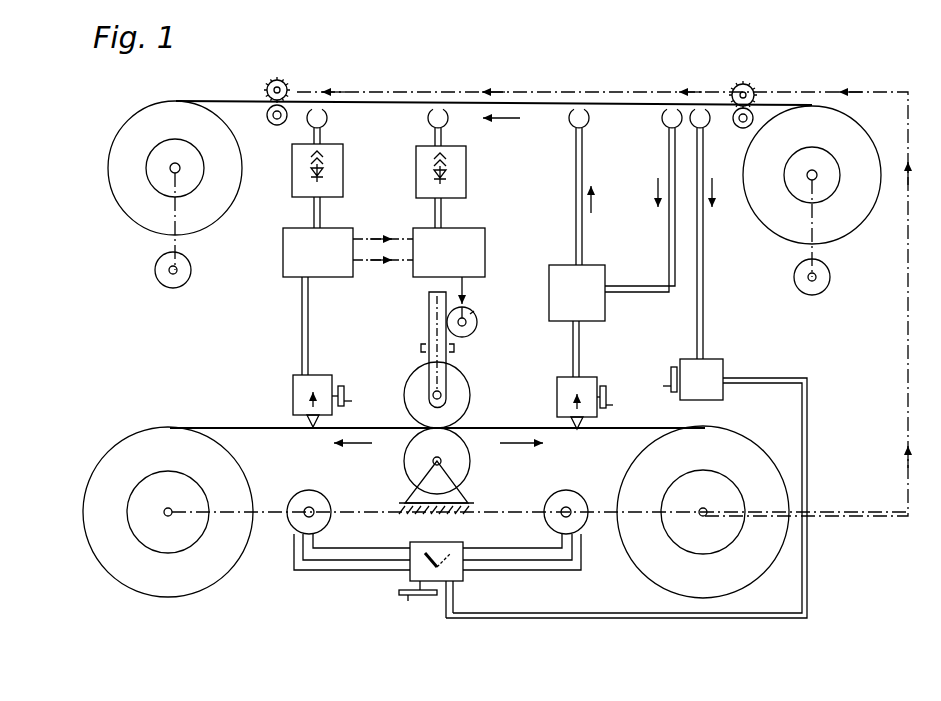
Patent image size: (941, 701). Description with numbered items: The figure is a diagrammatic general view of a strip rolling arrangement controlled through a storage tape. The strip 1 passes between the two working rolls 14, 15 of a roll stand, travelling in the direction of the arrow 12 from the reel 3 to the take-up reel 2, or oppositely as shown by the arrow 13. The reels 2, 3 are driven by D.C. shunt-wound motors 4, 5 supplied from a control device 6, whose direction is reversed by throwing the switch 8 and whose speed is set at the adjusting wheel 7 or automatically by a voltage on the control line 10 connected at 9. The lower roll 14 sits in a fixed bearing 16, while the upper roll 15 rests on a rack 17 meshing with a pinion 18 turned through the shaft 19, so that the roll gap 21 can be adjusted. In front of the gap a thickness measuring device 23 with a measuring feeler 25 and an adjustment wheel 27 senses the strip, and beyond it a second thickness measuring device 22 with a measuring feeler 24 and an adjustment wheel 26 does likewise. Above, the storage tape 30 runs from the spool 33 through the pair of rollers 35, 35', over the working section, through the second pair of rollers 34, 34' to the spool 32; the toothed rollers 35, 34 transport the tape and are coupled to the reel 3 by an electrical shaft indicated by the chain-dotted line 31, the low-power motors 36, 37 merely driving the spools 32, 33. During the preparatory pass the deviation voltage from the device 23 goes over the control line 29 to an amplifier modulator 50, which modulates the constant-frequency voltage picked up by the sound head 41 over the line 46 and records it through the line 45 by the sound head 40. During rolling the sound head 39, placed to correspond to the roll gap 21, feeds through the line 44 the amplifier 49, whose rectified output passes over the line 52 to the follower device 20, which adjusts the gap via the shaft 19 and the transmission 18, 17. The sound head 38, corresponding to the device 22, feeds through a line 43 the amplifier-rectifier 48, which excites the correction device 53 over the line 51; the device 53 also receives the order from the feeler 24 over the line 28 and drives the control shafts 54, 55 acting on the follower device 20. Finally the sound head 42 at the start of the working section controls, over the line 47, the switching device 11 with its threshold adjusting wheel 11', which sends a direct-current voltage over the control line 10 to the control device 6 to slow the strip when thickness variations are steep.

The strip 1 is at (611, 433).
The take-up reel 2 is at (112, 560).
The reel 3 is at (640, 556).
The D.C. shunt-wound motor 4 is at (300, 522).
The D.C. shunt-wound motor 5 is at (555, 523).
The control device 6 is at (418, 575).
The adjusting wheel 7 is at (418, 609).
The switch 8 is at (425, 553).
The connection point 9 is at (455, 585).
The control line 10 is at (808, 400).
The switching device 11 is at (719, 375).
The adjusting wheel 11' is at (668, 394).
The arrow 12 is at (332, 445).
The arrow 13 is at (537, 445).
The working roll 14 is at (412, 462).
The working roll 15 is at (412, 397).
The fixed bearing 16 is at (450, 470).
The rack 17 is at (430, 362).
The pinion 18 is at (470, 335).
The shaft 19 is at (465, 287).
The follower device 20 is at (476, 246).
The roll gap 21 is at (455, 428).
The thickness measuring device 22 is at (303, 391).
The thickness measuring device 23 is at (590, 378).
The measuring feeler 24 is at (305, 424).
The measuring feeler 25 is at (585, 425).
The adjustment wheel 26 is at (342, 385).
The adjustment wheel 27 is at (606, 395).
The line 28 is at (302, 331).
The control line 29 is at (583, 345).
The storage tape 30 is at (538, 108).
The chain-dotted line 31 is at (465, 92).
The reel or spool 32 is at (143, 213).
The reel or spool 33 is at (850, 215).
The roller 34 is at (275, 75).
The roller 34' is at (271, 128).
The roller 35 is at (764, 88).
The roller 35' is at (764, 127).
The electric motor 36 is at (165, 280).
The electric motor 37 is at (825, 285).
The sound head 38 is at (329, 117).
The sound head 39 is at (449, 118).
The sound head 40 is at (590, 118).
The sound head 41 is at (665, 124).
The sound head 42 is at (707, 124).
The signal line 43 is at (322, 137).
The line 44 is at (443, 137).
The line 45 is at (585, 162).
The line 46 is at (669, 240).
The line 47 is at (704, 240).
The amplifier-rectifier 48 is at (300, 185).
The amplifier 49 is at (420, 185).
The amplifier modulator 50 is at (555, 300).
The line 51 is at (312, 212).
The line 52 is at (445, 212).
The correction device 53 is at (293, 254).
The control shaft 54 is at (386, 242).
The control shaft 55 is at (389, 262).